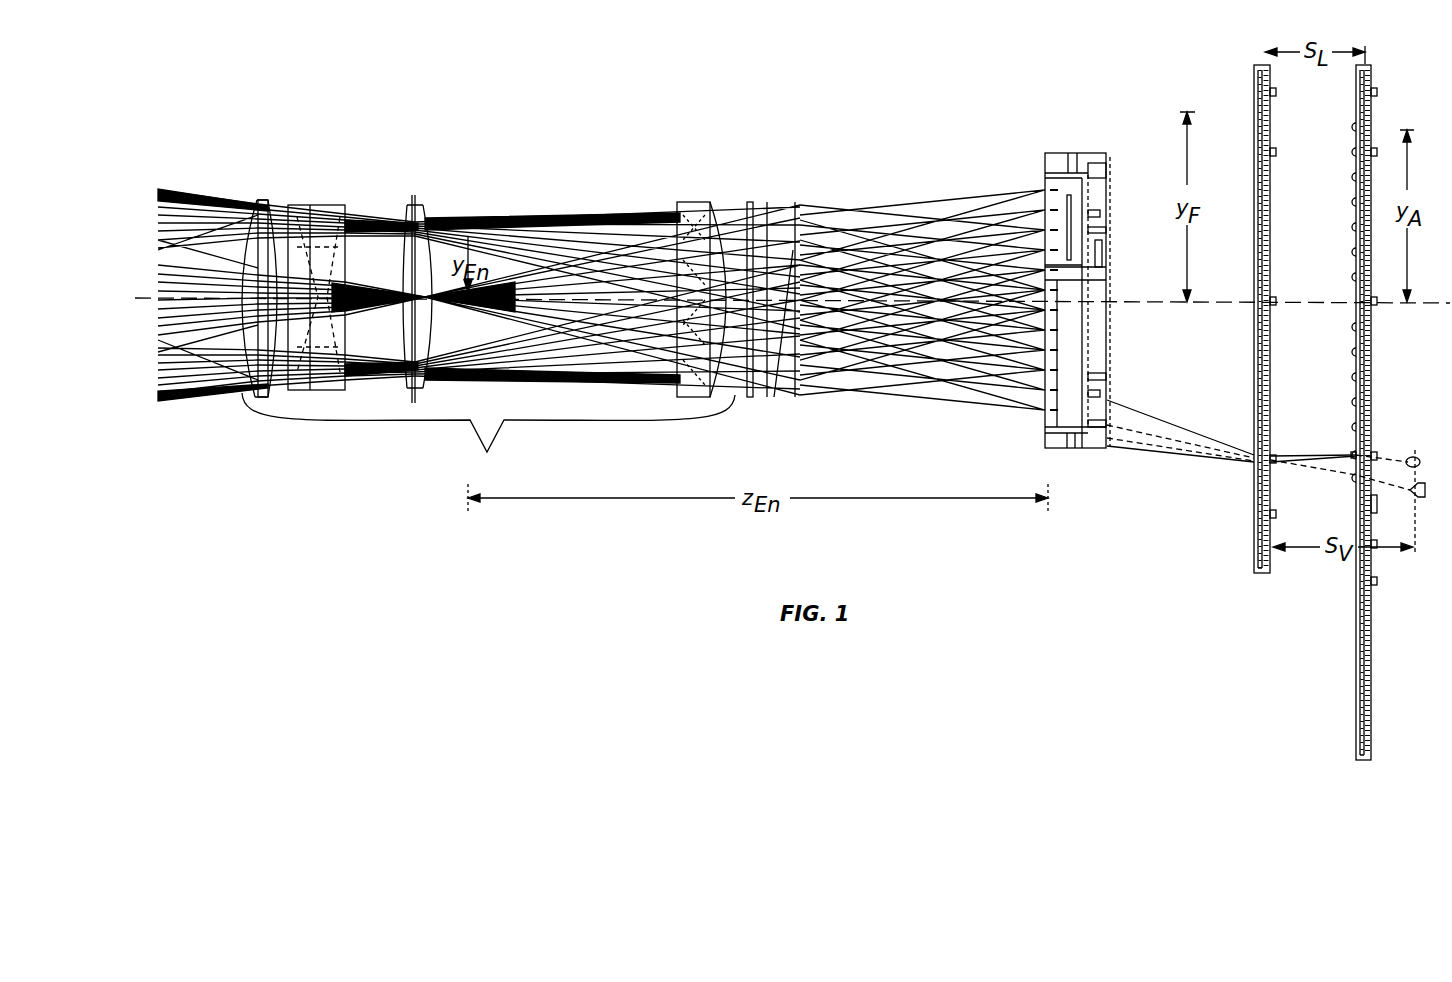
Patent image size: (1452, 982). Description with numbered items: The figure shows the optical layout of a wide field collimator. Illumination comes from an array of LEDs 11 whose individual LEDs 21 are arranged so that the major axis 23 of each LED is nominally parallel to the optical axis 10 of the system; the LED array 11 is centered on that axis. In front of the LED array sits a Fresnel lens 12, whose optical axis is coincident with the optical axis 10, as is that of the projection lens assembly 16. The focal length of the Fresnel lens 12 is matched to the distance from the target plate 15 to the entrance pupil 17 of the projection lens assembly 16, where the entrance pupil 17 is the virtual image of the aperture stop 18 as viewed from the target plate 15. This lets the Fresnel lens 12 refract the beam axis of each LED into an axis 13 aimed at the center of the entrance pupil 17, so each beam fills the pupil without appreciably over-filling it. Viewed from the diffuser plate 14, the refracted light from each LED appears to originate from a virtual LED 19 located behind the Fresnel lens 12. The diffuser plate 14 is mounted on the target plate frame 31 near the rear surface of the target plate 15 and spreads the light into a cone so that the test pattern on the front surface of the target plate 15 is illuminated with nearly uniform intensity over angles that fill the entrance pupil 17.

The optical axis 10 is at (147, 298).
The LED array 11 is at (1366, 66).
The Fresnel lens 12 is at (1254, 513).
The axis 13 is at (1152, 433).
The diffuser plate 14 is at (1112, 150).
The target plate 15 is at (1068, 194).
The projection lens assembly 16 is at (518, 341).
The entrance pupil 17 is at (470, 232).
The aperture stop 18 is at (411, 202).
The virtual LED 19 is at (1418, 498).
The LED 21 is at (1372, 404).
The major axis 23 is at (1332, 452).
The target plate frame 31 is at (1088, 448).